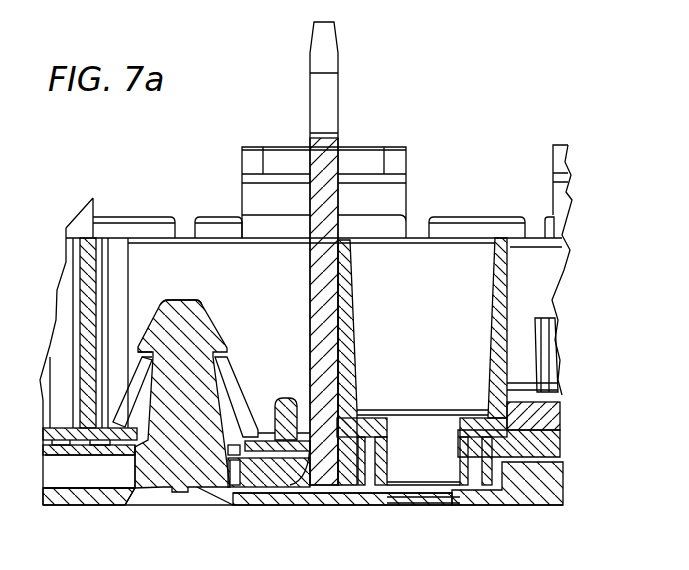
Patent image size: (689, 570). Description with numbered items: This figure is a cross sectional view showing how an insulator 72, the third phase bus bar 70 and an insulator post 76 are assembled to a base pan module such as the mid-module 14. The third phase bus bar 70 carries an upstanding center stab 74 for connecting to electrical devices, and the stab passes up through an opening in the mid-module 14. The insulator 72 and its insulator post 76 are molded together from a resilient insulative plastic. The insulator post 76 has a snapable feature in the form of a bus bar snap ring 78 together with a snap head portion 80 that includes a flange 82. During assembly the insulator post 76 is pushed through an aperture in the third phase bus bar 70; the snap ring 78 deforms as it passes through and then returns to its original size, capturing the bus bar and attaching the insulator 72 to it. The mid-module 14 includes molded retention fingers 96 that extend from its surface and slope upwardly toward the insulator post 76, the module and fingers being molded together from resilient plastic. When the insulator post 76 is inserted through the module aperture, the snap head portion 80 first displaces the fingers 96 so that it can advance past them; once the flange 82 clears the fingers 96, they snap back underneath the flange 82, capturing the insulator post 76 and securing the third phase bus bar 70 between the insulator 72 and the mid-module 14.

The mid-module 14 is at (88, 337).
The third phase bus bar 70 is at (50, 468).
The insulator 72 is at (97, 505).
The center stab 74 is at (338, 63).
The insulator post 76 is at (181, 298).
The bus bar snap ring 78 is at (132, 402).
The snap head portion 80 is at (212, 328).
The flange 82 is at (137, 362).
The retention fingers 96 is at (143, 440).